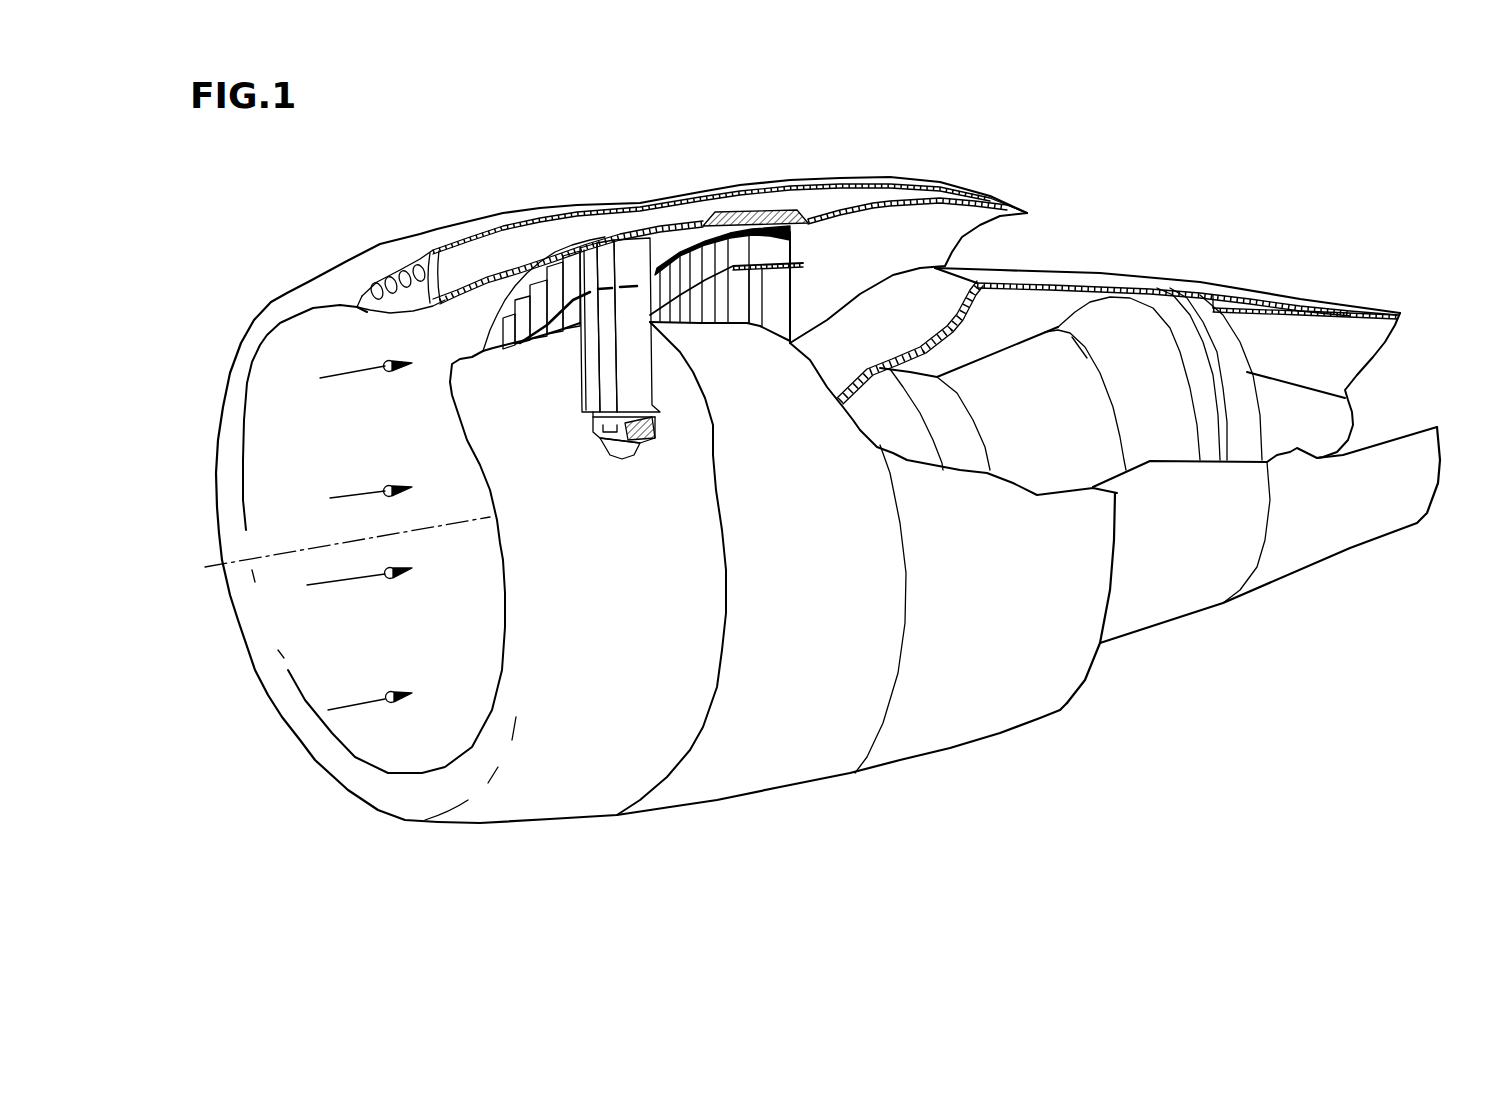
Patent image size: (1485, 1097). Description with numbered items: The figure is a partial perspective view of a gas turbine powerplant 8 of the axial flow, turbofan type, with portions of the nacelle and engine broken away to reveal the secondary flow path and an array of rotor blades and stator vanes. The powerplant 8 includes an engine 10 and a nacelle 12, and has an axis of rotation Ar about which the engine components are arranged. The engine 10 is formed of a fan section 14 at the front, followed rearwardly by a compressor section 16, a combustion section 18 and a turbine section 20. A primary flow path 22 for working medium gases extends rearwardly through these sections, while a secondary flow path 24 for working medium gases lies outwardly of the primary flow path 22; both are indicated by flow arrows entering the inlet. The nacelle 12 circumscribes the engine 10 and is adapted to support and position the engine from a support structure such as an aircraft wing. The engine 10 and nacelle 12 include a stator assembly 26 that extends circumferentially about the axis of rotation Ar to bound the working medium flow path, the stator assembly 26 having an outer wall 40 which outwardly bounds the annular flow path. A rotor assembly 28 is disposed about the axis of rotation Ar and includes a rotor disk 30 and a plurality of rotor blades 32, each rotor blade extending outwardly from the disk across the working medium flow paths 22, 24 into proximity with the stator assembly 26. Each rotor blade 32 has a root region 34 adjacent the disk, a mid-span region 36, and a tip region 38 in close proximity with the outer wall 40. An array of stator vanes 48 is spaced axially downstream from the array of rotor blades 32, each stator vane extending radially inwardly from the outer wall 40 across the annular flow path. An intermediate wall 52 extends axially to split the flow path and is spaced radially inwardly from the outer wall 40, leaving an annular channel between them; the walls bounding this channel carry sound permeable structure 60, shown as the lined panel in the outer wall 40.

The gas turbine powerplant 8 is at (692, 442).
The engine 10 is at (1225, 365).
The nacelle 12 is at (1058, 275).
The fan section 14 is at (620, 750).
The compressor section 16 is at (872, 400).
The combustion section 18 is at (958, 375).
The turbine section 20 is at (1017, 345).
The primary flow path 22 is at (348, 488).
The secondary flow path 24 is at (352, 372).
The stator assembly 26 is at (752, 412).
The rotor assembly 28 is at (566, 513).
The rotor disk 30 is at (627, 455).
The rotor blades 32 is at (625, 365).
The root region 34 is at (655, 438).
The mid-span region 36 is at (640, 336).
The tip region 38 is at (628, 254).
The outer wall 40 is at (475, 282).
The stator vanes 48 is at (737, 311).
The intermediate wall 52 is at (792, 262).
The sound permeable structure 60 is at (768, 222).
The axis of rotation Ar is at (212, 560).